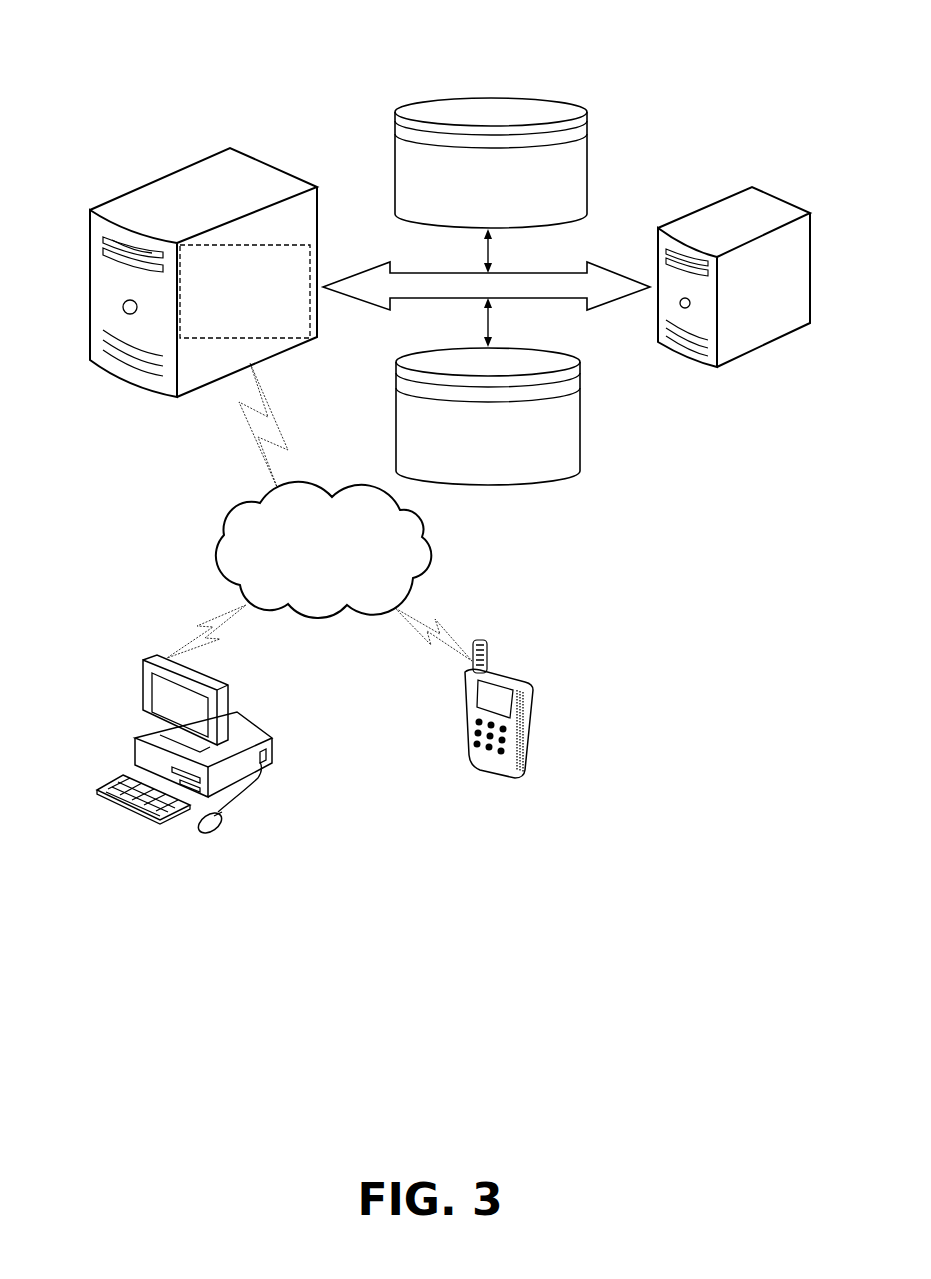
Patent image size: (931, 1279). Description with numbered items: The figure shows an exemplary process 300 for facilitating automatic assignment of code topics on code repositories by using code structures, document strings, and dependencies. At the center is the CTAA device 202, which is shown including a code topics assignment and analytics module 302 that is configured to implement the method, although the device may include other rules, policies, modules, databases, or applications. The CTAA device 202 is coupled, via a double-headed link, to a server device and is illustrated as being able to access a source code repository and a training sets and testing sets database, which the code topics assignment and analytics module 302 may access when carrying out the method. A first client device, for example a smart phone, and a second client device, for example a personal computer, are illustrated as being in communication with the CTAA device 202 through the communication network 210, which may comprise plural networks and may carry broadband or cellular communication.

The process 300 is at (288, 78).
The CTAA device 202 is at (143, 210).
The code topics assignment and analytics module 302 is at (245, 291).
The communication network 210 is at (433, 423).